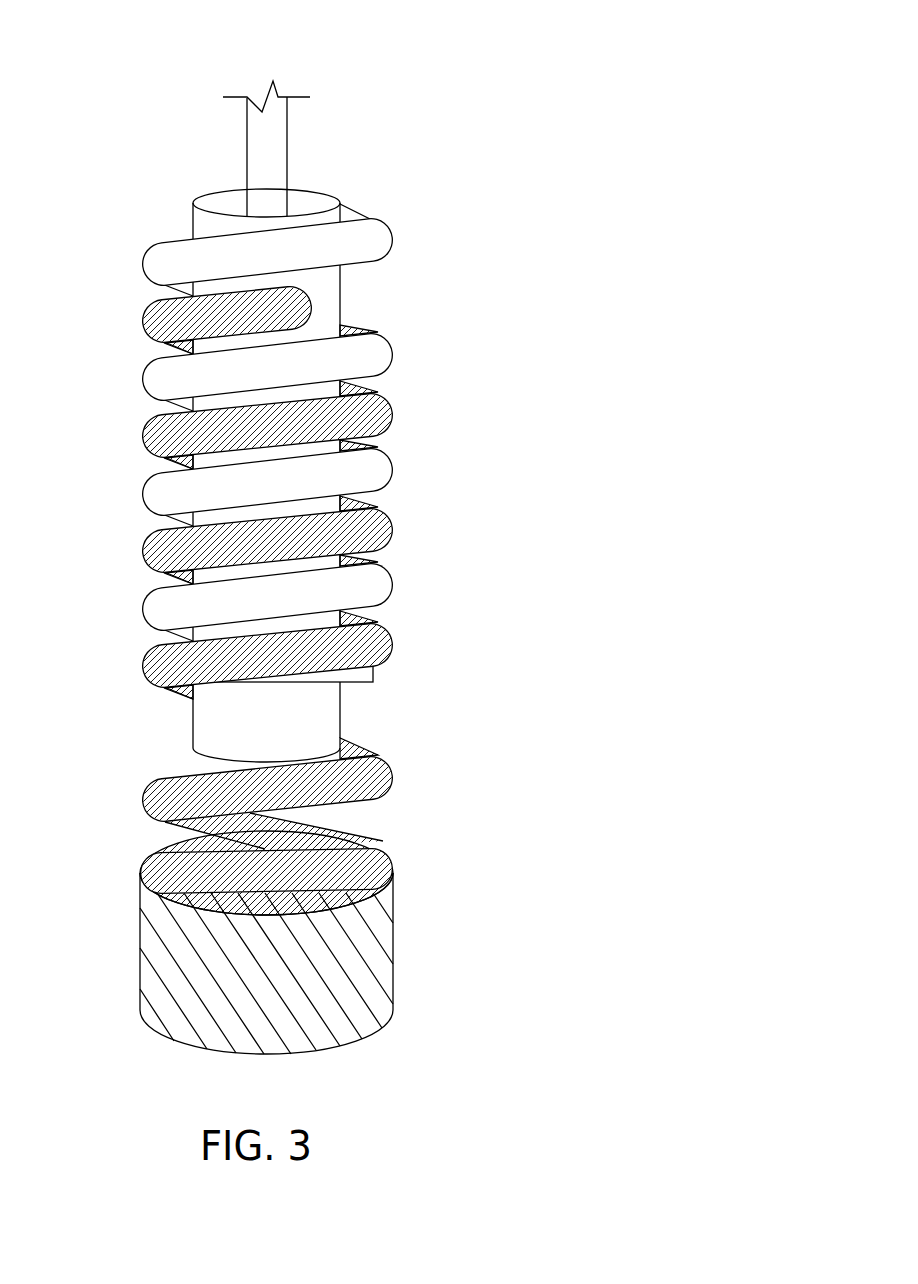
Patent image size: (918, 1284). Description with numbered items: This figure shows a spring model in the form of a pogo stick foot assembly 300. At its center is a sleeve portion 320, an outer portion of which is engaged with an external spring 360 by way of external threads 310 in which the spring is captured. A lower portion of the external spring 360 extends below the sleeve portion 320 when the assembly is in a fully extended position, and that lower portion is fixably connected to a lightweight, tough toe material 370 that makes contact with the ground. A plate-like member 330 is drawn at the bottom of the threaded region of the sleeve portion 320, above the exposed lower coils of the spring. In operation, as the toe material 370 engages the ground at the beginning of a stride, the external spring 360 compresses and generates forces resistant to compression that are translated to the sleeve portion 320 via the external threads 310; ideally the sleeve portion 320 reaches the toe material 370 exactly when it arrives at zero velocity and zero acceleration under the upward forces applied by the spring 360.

The pogo stick foot assembly 300 is at (432, 56).
The external threads 310 is at (474, 402).
The sleeve portion 320 is at (393, 582).
The plate 330 is at (429, 629).
The external spring 360 is at (140, 802).
The toe material 370 is at (396, 956).